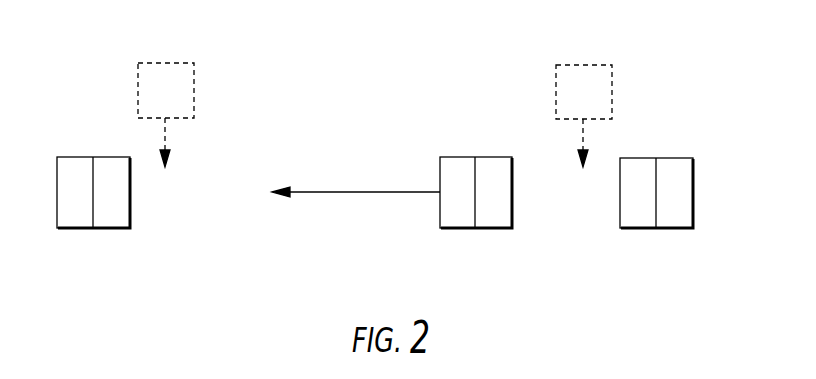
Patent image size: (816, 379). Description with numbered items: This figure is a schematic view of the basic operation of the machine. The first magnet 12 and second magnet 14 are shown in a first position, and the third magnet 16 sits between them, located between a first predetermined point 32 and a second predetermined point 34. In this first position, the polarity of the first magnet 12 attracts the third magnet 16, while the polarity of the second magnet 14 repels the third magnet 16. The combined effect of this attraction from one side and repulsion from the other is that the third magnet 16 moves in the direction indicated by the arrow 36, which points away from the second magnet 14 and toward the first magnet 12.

The first magnet 12 is at (73, 222).
The second magnet 14 is at (680, 222).
The third magnet 16 is at (455, 222).
The first predetermined point 32 is at (185, 63).
The second predetermined point 34 is at (602, 64).
The arrow 36 is at (360, 192).